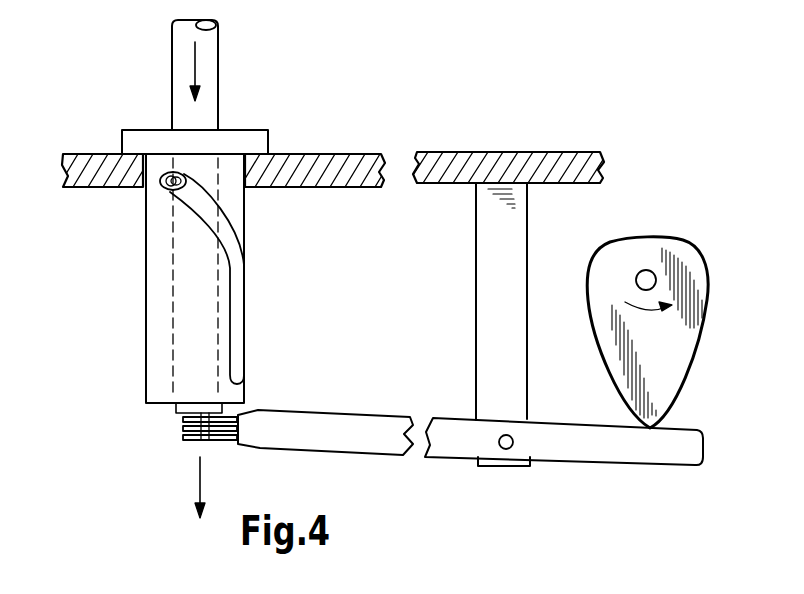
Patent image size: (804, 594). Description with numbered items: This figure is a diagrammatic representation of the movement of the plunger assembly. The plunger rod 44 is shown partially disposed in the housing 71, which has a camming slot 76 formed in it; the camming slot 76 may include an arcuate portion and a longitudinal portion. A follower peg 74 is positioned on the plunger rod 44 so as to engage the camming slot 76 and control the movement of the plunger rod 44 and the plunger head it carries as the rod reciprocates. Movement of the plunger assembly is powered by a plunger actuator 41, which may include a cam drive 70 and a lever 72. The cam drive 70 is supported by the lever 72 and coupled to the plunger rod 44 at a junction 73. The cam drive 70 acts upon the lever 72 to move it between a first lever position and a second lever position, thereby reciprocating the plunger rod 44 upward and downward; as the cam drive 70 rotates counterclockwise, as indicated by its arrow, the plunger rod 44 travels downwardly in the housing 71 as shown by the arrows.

The plunger rod 44 is at (172, 77).
The housing 71 is at (160, 350).
The follower peg 74 is at (166, 190).
The camming slot 76 is at (196, 238).
The junction 73 is at (207, 442).
The lever 72 is at (327, 452).
The cam drive 70 is at (645, 238).
The plunger actuator 41 is at (581, 481).